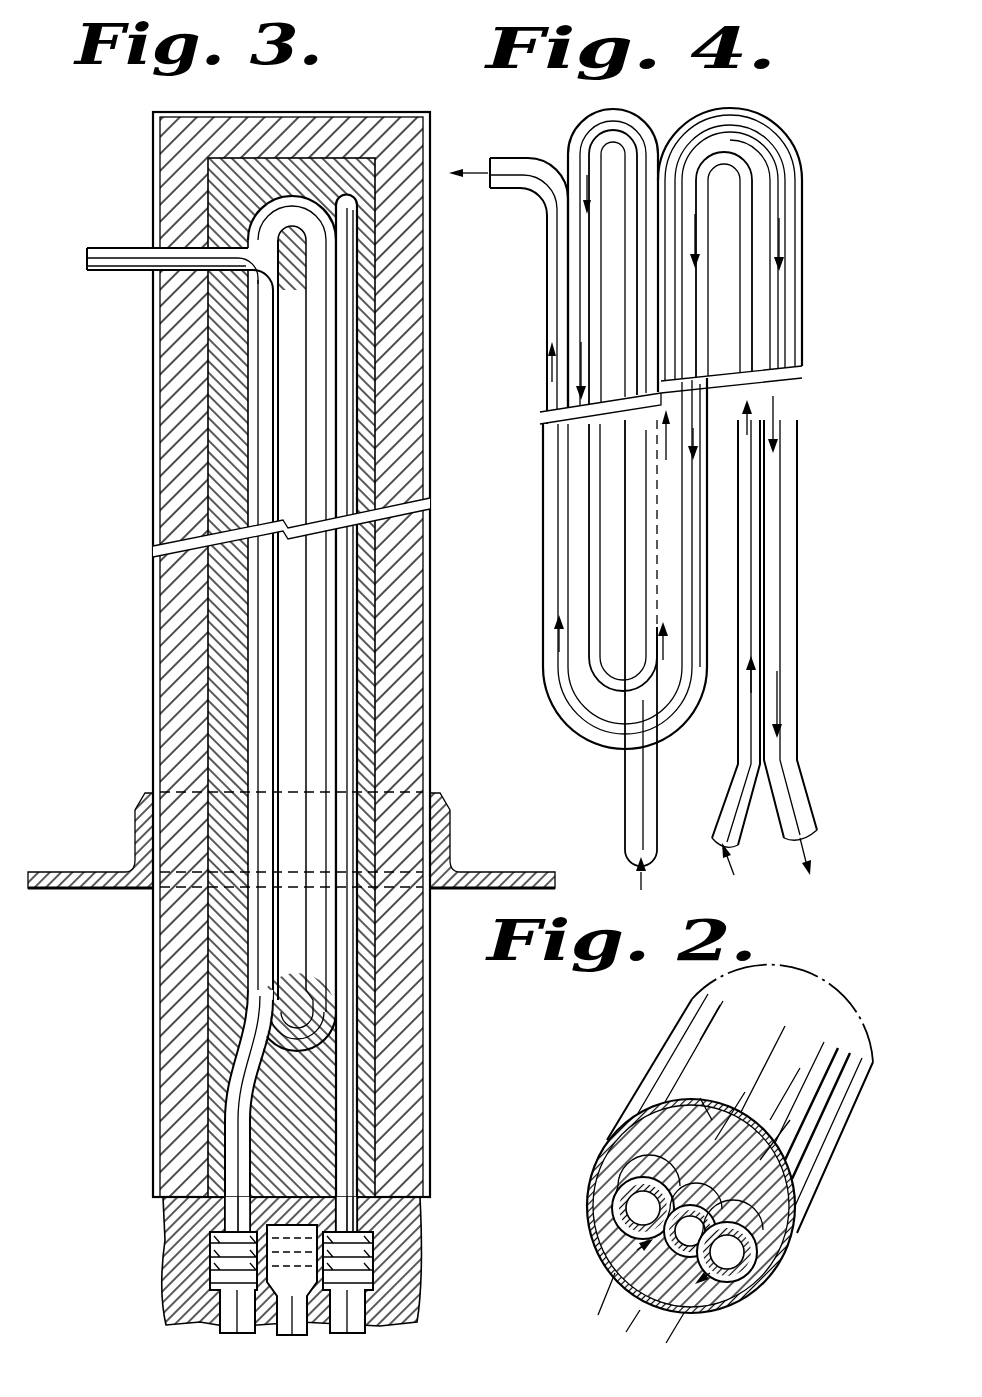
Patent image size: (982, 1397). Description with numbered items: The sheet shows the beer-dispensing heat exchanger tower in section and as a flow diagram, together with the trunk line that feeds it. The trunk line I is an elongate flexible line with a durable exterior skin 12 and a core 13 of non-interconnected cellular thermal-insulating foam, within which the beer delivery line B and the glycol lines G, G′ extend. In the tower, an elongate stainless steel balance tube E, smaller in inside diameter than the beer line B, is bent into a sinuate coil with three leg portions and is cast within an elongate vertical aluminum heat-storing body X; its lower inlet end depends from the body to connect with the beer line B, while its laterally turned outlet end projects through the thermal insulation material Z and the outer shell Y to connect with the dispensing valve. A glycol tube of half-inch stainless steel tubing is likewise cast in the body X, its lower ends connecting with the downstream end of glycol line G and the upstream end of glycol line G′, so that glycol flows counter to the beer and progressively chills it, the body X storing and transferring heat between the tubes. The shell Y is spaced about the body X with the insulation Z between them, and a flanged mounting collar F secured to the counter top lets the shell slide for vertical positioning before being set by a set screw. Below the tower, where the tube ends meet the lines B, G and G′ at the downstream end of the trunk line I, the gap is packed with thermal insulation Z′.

In FIG. 3, the heat-storing body X is at (215, 317).
In FIG. 3, the outer shell Y is at (150, 397).
In FIG. 3, the thermal insulation material Z is at (160, 459).
In FIG. 3, the thermal insulation Z′ is at (168, 1232).
In FIG. 3, the balance tube E is at (258, 592).
In FIG. 4, the balance tube E is at (543, 244).
In FIG. 3, the flanged mounting collar F is at (110, 868).
In FIG. 3, the glycol line G is at (215, 1332).
In FIG. 2, the glycol line G is at (774, 1247).
In FIG. 3, the glycol line G′ is at (362, 1302).
In FIG. 2, the glycol line G′ is at (612, 1190).
In FIG. 3, the beer delivery line B is at (334, 1323).
In FIG. 2, the beer delivery line B is at (673, 1252).
In FIG. 2, the trunk line I is at (638, 1078).
In FIG. 2, the exterior skin 12 is at (673, 1013).
In FIG. 2, the core 13 is at (709, 1120).